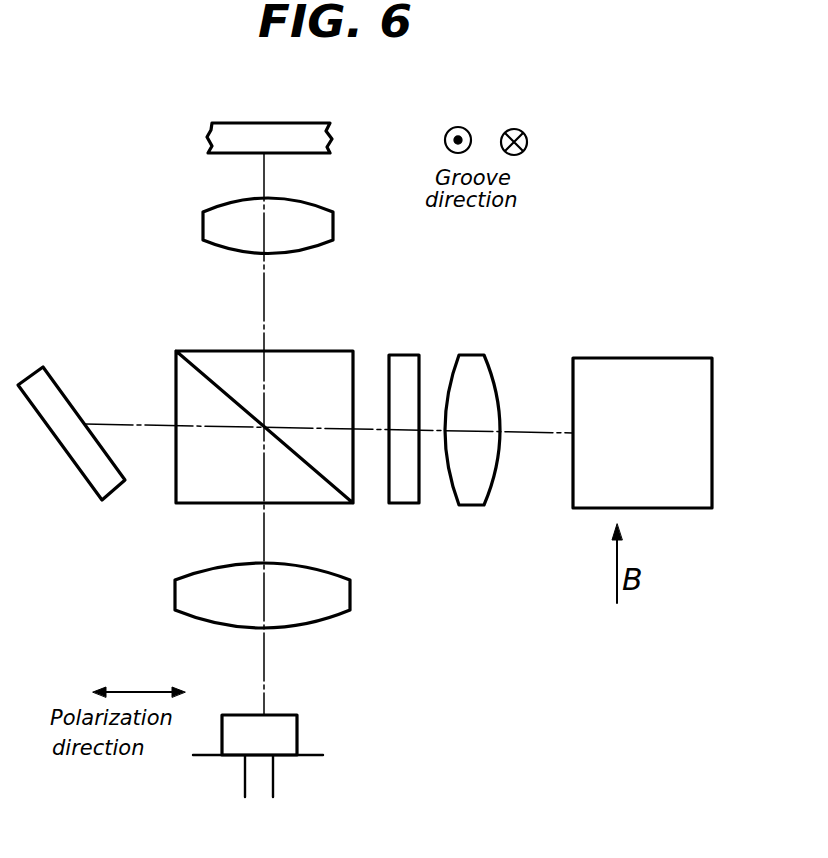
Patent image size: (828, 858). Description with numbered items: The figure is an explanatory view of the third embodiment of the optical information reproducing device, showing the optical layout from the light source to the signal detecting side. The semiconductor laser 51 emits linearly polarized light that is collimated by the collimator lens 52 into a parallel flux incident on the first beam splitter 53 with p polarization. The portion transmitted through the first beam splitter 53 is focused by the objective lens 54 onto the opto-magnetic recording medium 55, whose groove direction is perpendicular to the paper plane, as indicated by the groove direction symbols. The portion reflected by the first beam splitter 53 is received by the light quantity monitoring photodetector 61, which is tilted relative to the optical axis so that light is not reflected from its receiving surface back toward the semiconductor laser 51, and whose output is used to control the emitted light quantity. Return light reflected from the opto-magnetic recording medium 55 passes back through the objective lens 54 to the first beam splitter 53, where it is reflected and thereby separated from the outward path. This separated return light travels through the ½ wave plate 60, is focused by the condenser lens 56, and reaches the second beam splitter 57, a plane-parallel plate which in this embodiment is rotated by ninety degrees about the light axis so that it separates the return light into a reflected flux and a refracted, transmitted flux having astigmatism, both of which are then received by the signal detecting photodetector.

The semiconductor laser 51 is at (298, 722).
The collimator lens 52 is at (352, 597).
The first beam splitter 53 is at (333, 351).
The objective lens 54 is at (334, 220).
The opto-magnetic recording medium 55 is at (332, 135).
The condenser lens 56 is at (476, 355).
The second beam splitter 57 is at (652, 358).
The ½ wave plate 60 is at (405, 355).
The light quantity monitoring photodetector 61 is at (64, 396).